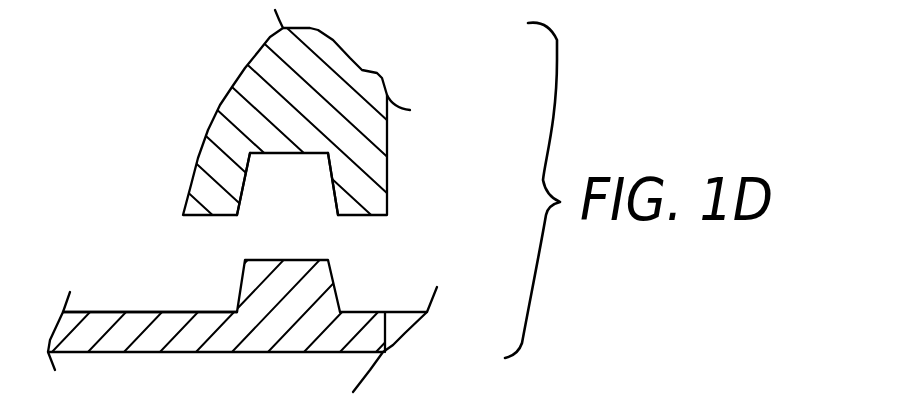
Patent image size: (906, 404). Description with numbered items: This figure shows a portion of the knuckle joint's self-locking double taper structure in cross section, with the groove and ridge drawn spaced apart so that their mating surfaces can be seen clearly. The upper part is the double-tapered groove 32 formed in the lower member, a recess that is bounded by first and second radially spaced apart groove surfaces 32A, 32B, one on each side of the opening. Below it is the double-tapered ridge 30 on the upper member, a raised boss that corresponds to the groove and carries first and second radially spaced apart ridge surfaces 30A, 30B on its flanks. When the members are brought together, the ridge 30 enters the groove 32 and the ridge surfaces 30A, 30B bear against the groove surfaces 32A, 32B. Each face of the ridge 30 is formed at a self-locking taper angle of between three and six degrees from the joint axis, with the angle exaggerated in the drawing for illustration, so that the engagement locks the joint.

The double-tapered groove 32 is at (293, 173).
The first groove surface 32A is at (238, 191).
The second groove surface 32B is at (342, 193).
The double-tapered ridge 30 is at (260, 288).
The first ridge surface 30A is at (237, 291).
The second ridge surface 30B is at (332, 273).